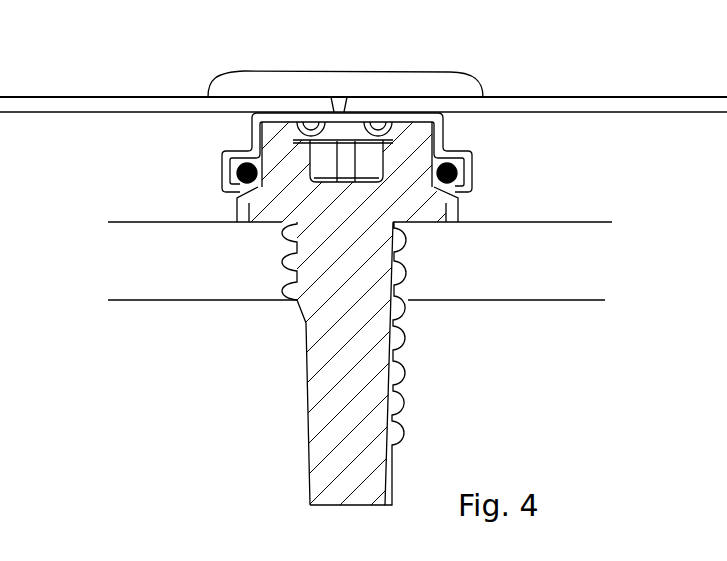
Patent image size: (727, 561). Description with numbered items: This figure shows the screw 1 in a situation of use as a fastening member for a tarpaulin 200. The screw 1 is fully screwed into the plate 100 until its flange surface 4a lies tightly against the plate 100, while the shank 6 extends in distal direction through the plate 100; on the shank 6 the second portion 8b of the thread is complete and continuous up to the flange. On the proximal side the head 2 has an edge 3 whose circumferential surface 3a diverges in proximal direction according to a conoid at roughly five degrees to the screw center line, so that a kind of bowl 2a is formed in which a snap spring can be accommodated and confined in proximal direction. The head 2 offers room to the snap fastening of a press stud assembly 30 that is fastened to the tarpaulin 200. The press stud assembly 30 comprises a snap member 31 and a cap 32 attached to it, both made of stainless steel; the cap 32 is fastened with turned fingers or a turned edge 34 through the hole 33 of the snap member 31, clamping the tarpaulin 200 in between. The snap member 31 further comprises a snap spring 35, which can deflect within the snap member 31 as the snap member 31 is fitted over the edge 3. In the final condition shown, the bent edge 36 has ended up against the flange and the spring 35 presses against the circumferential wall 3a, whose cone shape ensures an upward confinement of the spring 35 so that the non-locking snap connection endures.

The screw 1 is at (363, 310).
The head 2 is at (343, 169).
The bowl 2a is at (228, 157).
The edge 3 is at (363, 310).
The circumferential surface 3a is at (463, 153).
The flange surface 4a is at (432, 224).
The shank 6 is at (318, 363).
The second portion of the thread 8b is at (283, 294).
The press stud assembly 30 is at (447, 148).
The snap member 31 is at (472, 173).
The cap 32 is at (432, 77).
The hole 33 is at (336, 112).
The turned edge 34 is at (346, 111).
The snap spring 35 is at (238, 173).
The bent edge 36 is at (235, 197).
The plate 100 is at (579, 273).
The tarpaulin 200 is at (584, 103).